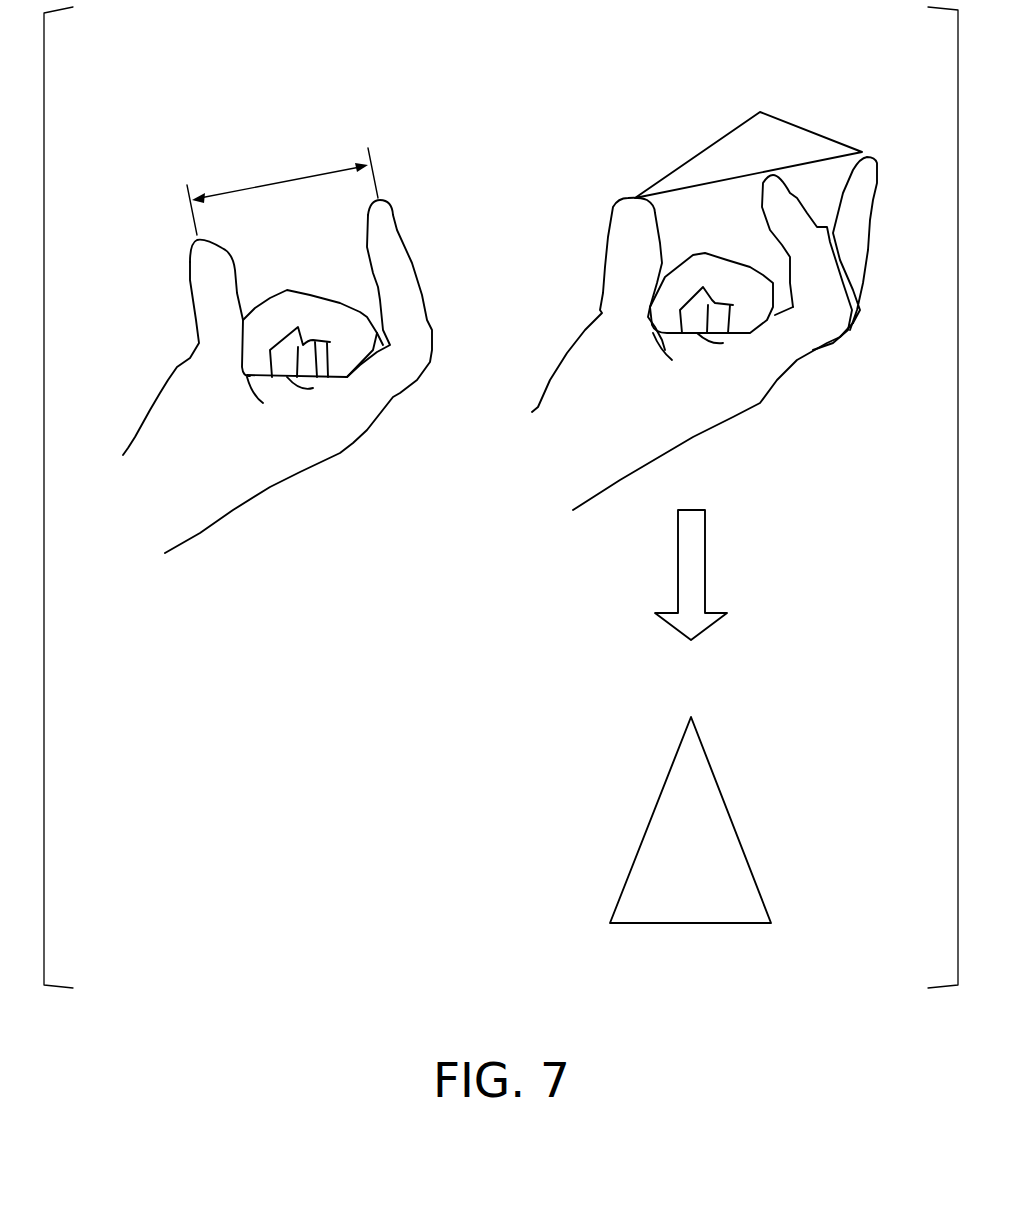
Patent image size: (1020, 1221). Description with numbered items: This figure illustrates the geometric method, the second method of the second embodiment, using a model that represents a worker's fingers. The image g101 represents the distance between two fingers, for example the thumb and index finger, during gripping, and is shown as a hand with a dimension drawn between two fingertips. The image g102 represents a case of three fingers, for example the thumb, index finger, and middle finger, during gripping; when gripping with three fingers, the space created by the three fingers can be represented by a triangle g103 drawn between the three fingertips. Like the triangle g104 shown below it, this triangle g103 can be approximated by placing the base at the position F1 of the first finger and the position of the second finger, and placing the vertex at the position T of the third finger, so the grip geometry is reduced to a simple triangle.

The image g101 is at (150, 272).
The image g102 is at (572, 220).
The triangle g103 is at (787, 122).
The triangle g104 is at (785, 748).
The position of the third finger T is at (691, 697).
The position of the first finger F1 is at (685, 938).